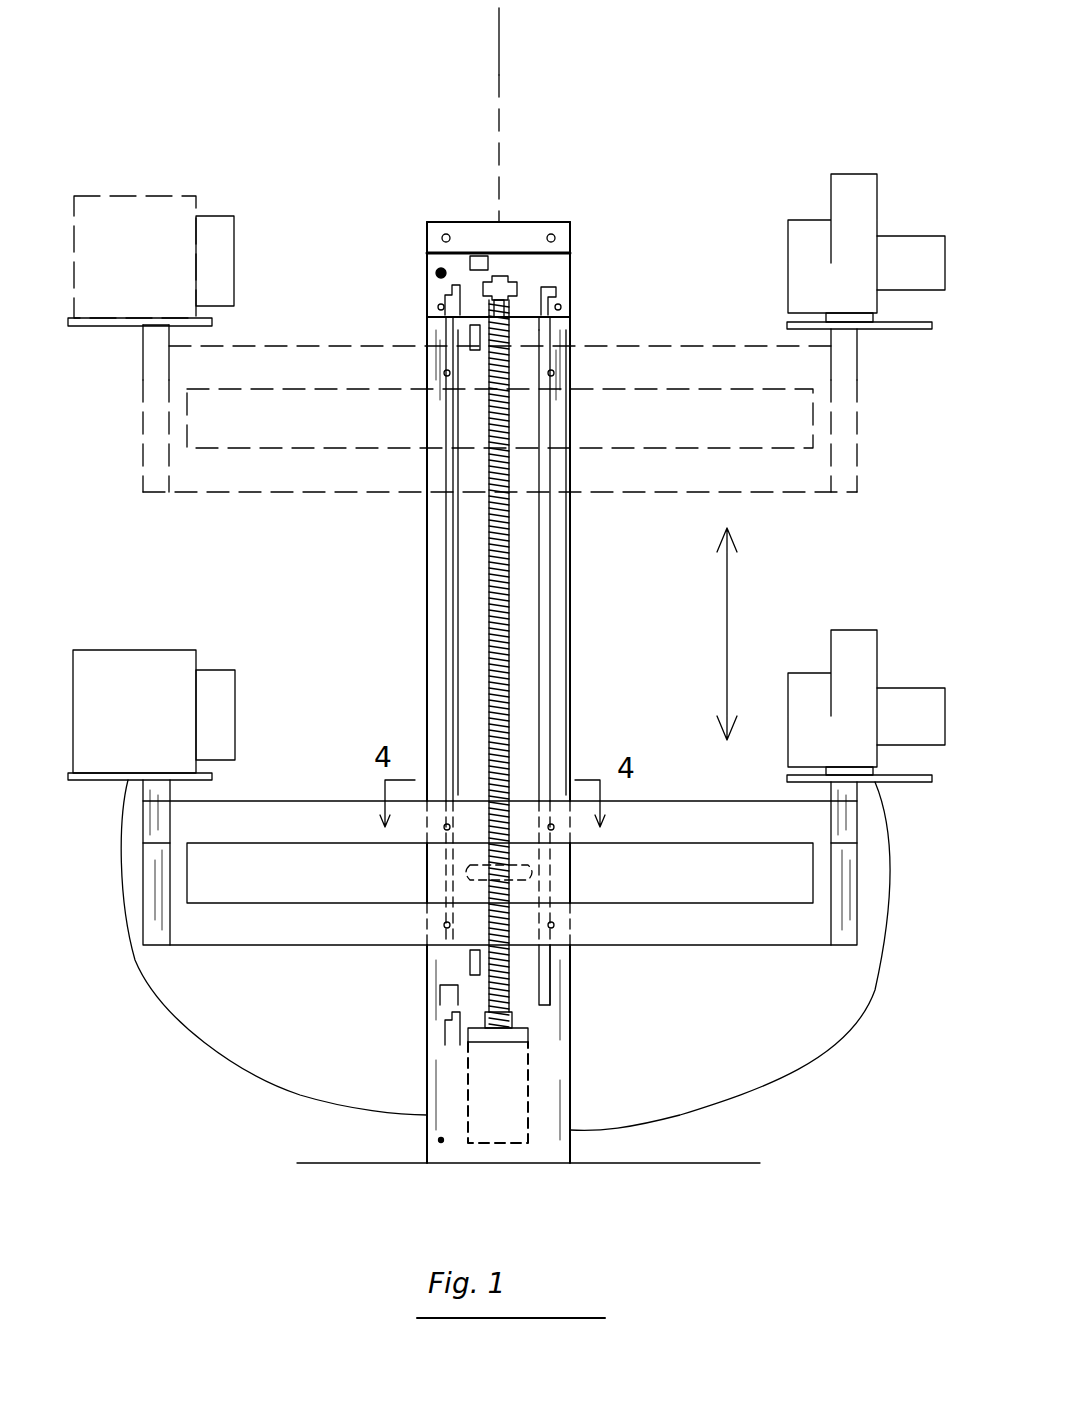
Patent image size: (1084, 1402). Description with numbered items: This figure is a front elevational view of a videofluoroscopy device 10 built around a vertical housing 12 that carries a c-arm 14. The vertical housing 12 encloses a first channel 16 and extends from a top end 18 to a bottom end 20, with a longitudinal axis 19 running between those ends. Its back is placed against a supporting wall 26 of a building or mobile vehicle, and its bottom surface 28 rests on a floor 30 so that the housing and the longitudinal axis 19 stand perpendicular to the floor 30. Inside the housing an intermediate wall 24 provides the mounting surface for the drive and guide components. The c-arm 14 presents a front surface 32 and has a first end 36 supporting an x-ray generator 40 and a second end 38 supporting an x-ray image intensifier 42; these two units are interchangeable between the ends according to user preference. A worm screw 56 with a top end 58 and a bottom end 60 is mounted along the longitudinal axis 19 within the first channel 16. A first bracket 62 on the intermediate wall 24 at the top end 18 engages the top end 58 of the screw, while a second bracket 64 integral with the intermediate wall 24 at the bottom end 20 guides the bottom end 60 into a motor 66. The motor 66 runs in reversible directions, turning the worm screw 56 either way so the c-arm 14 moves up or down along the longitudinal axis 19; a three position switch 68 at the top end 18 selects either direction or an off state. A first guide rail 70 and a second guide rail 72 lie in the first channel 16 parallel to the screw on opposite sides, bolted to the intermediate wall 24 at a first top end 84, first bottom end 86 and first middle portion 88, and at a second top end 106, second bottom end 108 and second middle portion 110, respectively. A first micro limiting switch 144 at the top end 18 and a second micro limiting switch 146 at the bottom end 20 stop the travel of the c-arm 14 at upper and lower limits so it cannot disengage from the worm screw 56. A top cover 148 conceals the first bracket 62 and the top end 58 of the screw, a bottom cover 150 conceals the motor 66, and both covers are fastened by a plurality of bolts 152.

The videofluoroscopy device 10 is at (585, 118).
The vertical housing 12 is at (584, 531).
The c-arm 14 is at (280, 800).
The first channel 16 is at (525, 675).
The top end 18 is at (427, 222).
The longitudinal axis 19 is at (501, 43).
The bottom end 20 is at (572, 1092).
The intermediate wall 24 is at (555, 962).
The supporting wall 26 is at (720, 165).
The bottom surface 28 is at (518, 1163).
The floor 30 is at (665, 1160).
The front surface 32 is at (265, 948).
The first end 36 is at (165, 876).
The second end 38 is at (835, 843).
The x-ray generator 40 is at (148, 196).
The x-ray image intensifier 42 is at (848, 178).
The worm screw 56 is at (513, 563).
The top end 58 is at (510, 305).
The bottom end 60 is at (467, 1058).
The first bracket 62 is at (560, 272).
The second bracket 64 is at (515, 1042).
The motor 66 is at (540, 1070).
The three position switch 68 is at (436, 270).
The first guide rail 70 is at (445, 590).
The second guide rail 72 is at (548, 603).
The first top end 84 is at (447, 302).
The first bottom end 86 is at (447, 1040).
The first middle portion 88 is at (455, 612).
The second top end 106 is at (560, 318).
The second bottom end 108 is at (553, 1003).
The second middle portion 110 is at (553, 640).
The first micro limiting switch 144 is at (470, 345).
The second micro limiting switch 146 is at (440, 975).
The top cover 148 is at (478, 268).
The bottom cover 150 is at (458, 1150).
The bolts 152 is at (446, 232).